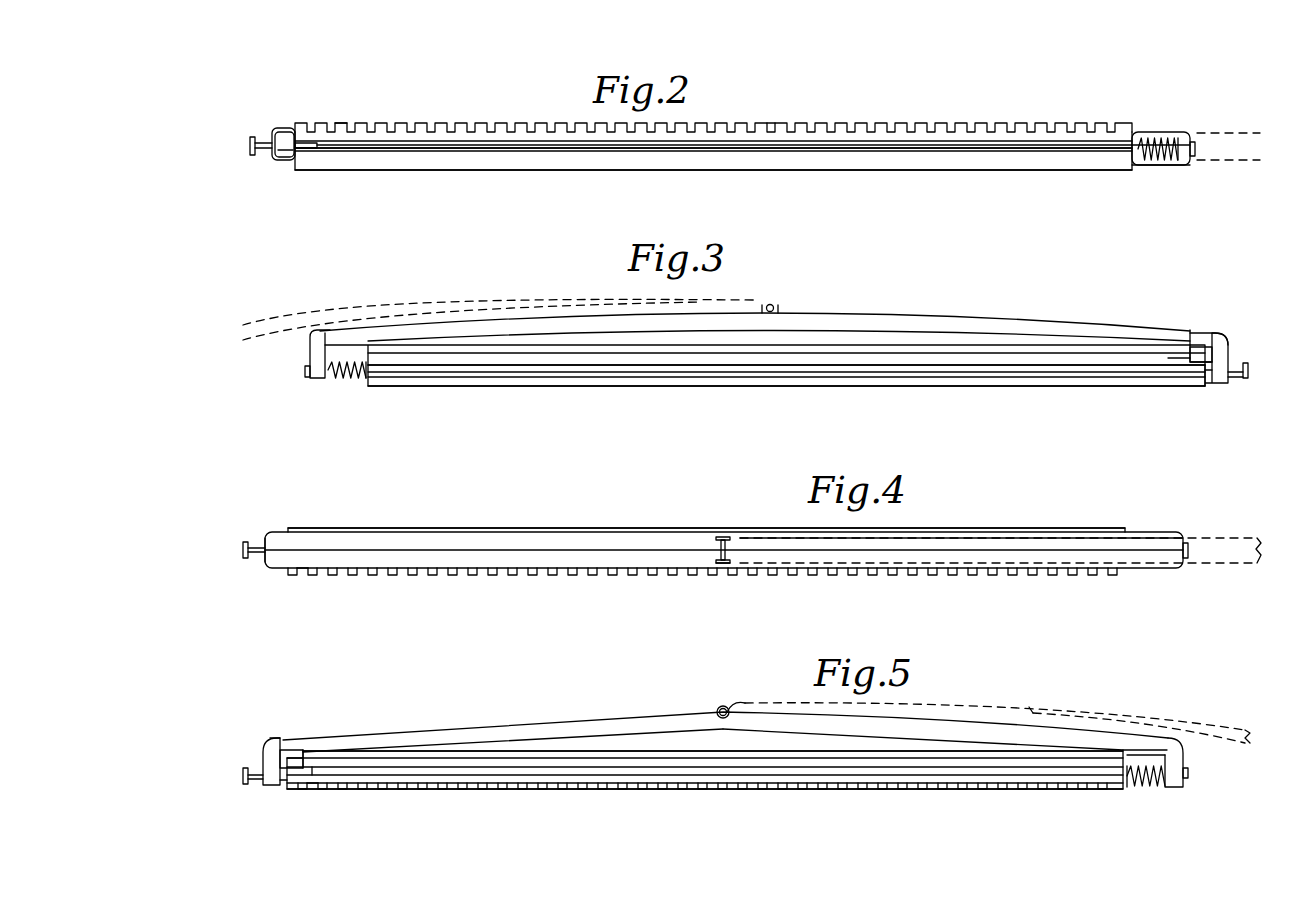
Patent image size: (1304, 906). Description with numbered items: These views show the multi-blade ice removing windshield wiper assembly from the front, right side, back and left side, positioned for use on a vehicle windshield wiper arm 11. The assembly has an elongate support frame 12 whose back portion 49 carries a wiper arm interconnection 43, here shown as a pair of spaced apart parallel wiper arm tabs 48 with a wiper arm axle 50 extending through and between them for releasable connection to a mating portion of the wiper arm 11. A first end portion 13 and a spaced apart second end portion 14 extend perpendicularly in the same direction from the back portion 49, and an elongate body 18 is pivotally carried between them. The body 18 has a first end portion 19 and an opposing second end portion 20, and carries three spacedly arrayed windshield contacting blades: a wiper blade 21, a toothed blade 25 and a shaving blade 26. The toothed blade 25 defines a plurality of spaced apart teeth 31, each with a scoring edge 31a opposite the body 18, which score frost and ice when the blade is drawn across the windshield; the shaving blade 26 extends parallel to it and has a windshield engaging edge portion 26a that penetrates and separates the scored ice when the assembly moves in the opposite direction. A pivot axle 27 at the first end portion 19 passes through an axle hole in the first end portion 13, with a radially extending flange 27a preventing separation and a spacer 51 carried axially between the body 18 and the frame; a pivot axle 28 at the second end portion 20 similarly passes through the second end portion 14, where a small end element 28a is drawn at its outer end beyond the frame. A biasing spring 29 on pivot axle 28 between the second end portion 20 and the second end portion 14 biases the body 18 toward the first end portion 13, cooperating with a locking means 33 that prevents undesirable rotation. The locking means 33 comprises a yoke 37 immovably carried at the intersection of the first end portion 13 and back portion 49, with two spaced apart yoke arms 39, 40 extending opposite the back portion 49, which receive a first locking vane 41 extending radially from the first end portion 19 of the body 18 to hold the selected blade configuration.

In FIG. 2, the vehicle windshield wiper arm 11 is at (1210, 176).
In FIG. 3, the vehicle windshield wiper arm 11 is at (482, 290).
In FIG. 4, the vehicle windshield wiper arm 11 is at (1189, 520).
In FIG. 5, the vehicle windshield wiper arm 11 is at (1028, 692).
In FIG. 2, the support frame 12 is at (1150, 180).
In FIG. 3, the support frame 12 is at (937, 305).
In FIG. 4, the support frame 12 is at (277, 515).
In FIG. 5, the support frame 12 is at (439, 715).
In FIG. 2, the first end portion 13 is at (277, 162).
In FIG. 3, the first end portion 13 is at (1225, 354).
In FIG. 4, the first end portion 13 is at (266, 566).
In FIG. 5, the first end portion 13 is at (268, 752).
In FIG. 2, the second end portion 14 is at (1184, 138).
In FIG. 5, the second end portion 14 is at (1180, 752).
In FIG. 2, the elongate body 18 is at (594, 180).
In FIG. 3, the elongate body 18 is at (945, 397).
In FIG. 5, the elongate body 18 is at (380, 805).
In FIG. 2, the first end portion of body 19 is at (326, 148).
In FIG. 3, the first end portion of body 19 is at (1170, 360).
In FIG. 5, the first end portion of body 19 is at (312, 770).
In FIG. 2, the second end portion of body 20 is at (1102, 147).
In FIG. 3, the second end portion of body 20 is at (390, 370).
In FIG. 4, the second end portion of body 20 is at (1095, 530).
In FIG. 5, the second end portion of body 20 is at (1112, 765).
In FIG. 3, the wiper blade 21 is at (825, 350).
In FIG. 5, the wiper blade 21 is at (547, 750).
In FIG. 2, the toothed blade 25 is at (440, 130).
In FIG. 5, the toothed blade 25 is at (572, 792).
In FIG. 2, the shaving blade 26 is at (432, 165).
In FIG. 3, the shaving blade 26 is at (492, 381).
In FIG. 4, the shaving blade 26 is at (466, 528).
In FIG. 2, the windshield engaging edge portion 26a is at (882, 165).
In FIG. 3, the windshield engaging edge portion 26a is at (592, 387).
In FIG. 4, the windshield engaging edge portion 26a is at (545, 528).
In FIG. 2, the pivot axle 27 is at (265, 143).
In FIG. 3, the pivot axle 27 is at (1236, 380).
In FIG. 4, the pivot axle 27 is at (256, 548).
In FIG. 5, the pivot axle 27 is at (258, 781).
In FIG. 2, the radially extending flange 27a is at (251, 156).
In FIG. 3, the radially extending flange 27a is at (1248, 380).
In FIG. 4, the radially extending flange 27a is at (246, 558).
In FIG. 5, the radially extending flange 27a is at (244, 784).
In FIG. 2, the pivot axle 28 is at (1150, 140).
In FIG. 3, the pivot axle 28 is at (366, 380).
In FIG. 5, the pivot axle 28 is at (1135, 790).
In FIG. 2, the stop 28a is at (1196, 148).
In FIG. 3, the stop 28a is at (305, 370).
In FIG. 4, the stop 28a is at (1188, 560).
In FIG. 5, the stop 28a is at (1190, 773).
In FIG. 2, the biasing spring 29 is at (1160, 140).
In FIG. 3, the biasing spring 29 is at (340, 382).
In FIG. 5, the biasing spring 29 is at (1157, 790).
In FIG. 2, the teeth 31 is at (358, 126).
In FIG. 4, the teeth 31 is at (472, 576).
In FIG. 5, the teeth 31 is at (470, 792).
In FIG. 2, the scoring edge 31a is at (770, 124).
In FIG. 4, the scoring edge 31a is at (530, 576).
In FIG. 5, the scoring edge 31a is at (1000, 792).
In FIG. 3, the locking means 33 is at (1195, 330).
In FIG. 4, the locking means 33 is at (727, 570).
In FIG. 5, the locking means 33 is at (287, 735).
In FIG. 3, the yoke 37 is at (1213, 338).
In FIG. 5, the yoke 37 is at (282, 748).
In FIG. 5, the yoke arm 39 is at (303, 755).
In FIG. 3, the yoke arm 40 is at (1190, 345).
In FIG. 2, the first locking vane 41 is at (302, 150).
In FIG. 5, the wiper arm interconnection 43 is at (745, 706).
In FIG. 3, the wiper arm tabs 48 is at (765, 305).
In FIG. 4, the wiper arm tabs 48 is at (720, 537).
In FIG. 5, the wiper arm tabs 48 is at (725, 705).
In FIG. 3, the back portion 49 is at (1036, 330).
In FIG. 4, the back portion 49 is at (396, 556).
In FIG. 5, the back portion 49 is at (630, 727).
In FIG. 3, the wiper arm axle 50 is at (777, 306).
In FIG. 4, the wiper arm axle 50 is at (728, 545).
In FIG. 5, the wiper arm axle 50 is at (717, 712).
In FIG. 2, the spacer 51 is at (280, 157).
In FIG. 3, the spacer 51 is at (1208, 378).
In FIG. 5, the spacer 51 is at (280, 782).